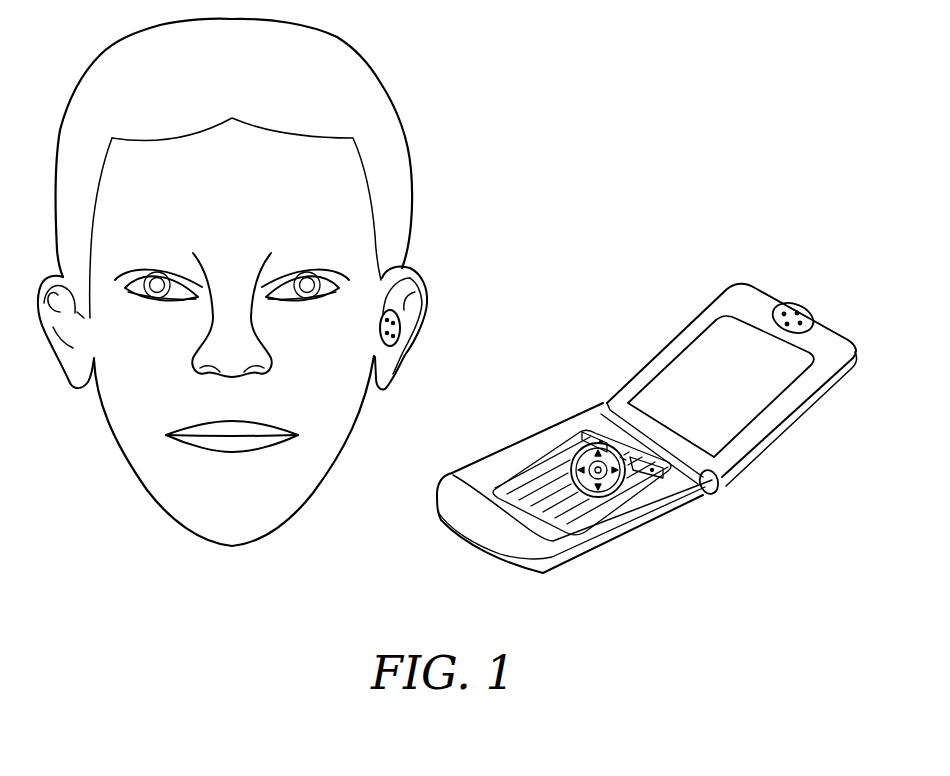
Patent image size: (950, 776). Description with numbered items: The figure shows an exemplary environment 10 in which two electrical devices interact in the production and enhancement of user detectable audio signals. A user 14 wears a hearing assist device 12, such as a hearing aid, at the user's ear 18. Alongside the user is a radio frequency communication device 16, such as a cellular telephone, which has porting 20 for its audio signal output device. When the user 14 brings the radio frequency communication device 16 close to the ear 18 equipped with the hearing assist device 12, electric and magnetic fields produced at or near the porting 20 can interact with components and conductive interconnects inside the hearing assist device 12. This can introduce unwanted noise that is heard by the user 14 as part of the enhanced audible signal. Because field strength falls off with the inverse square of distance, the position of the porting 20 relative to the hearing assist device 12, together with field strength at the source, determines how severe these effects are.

The environment 10 is at (665, 387).
The hearing assist device 12 is at (410, 275).
The user 14 is at (352, 170).
The radio frequency communication device 16 is at (807, 397).
The user's ear 18 is at (413, 302).
The porting 20 is at (796, 306).